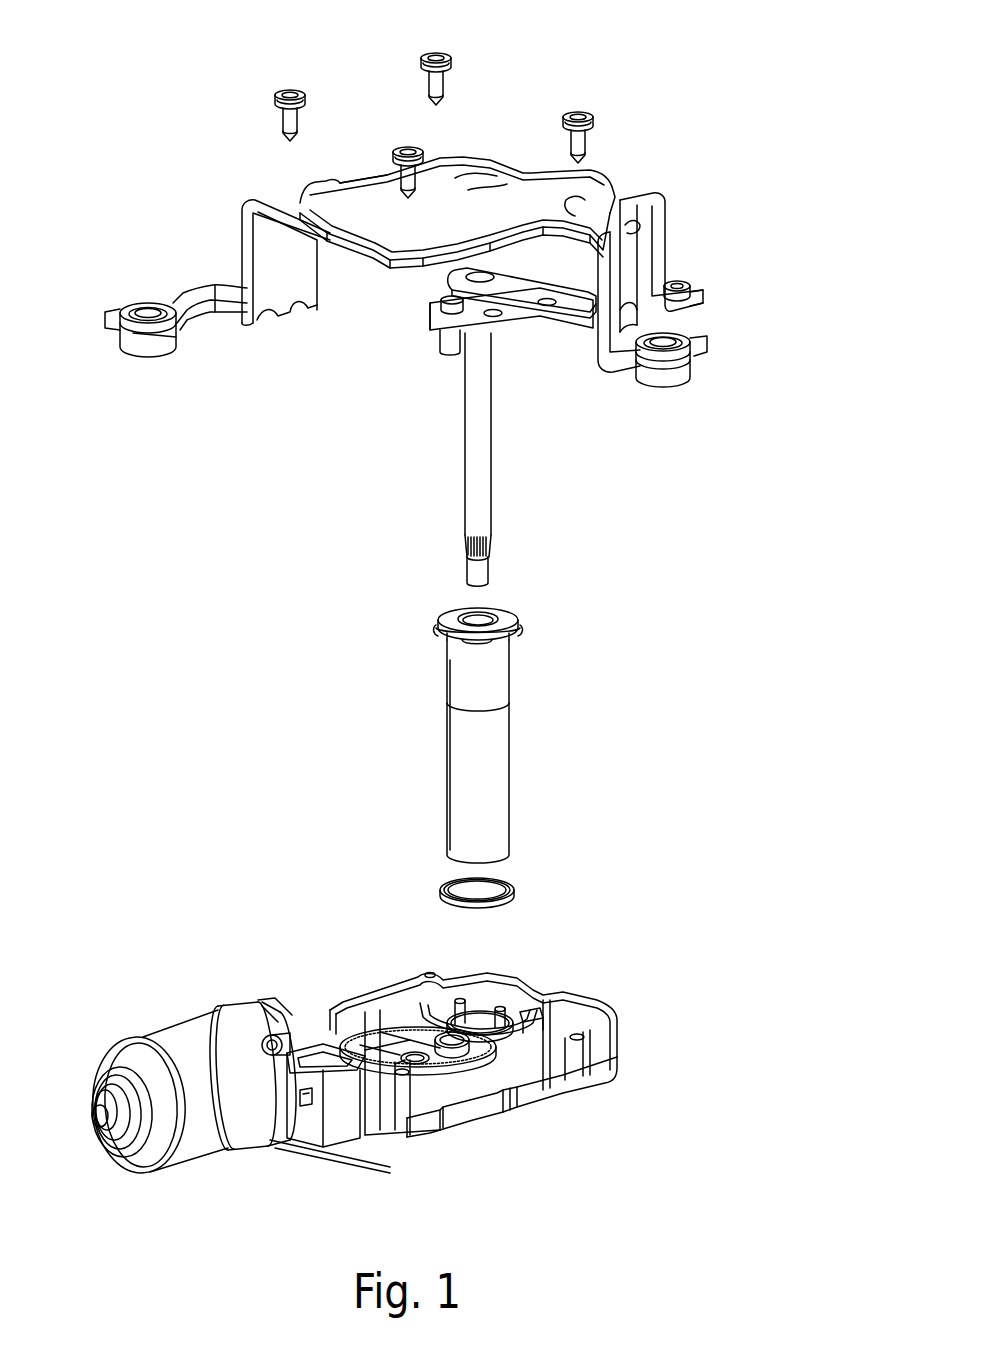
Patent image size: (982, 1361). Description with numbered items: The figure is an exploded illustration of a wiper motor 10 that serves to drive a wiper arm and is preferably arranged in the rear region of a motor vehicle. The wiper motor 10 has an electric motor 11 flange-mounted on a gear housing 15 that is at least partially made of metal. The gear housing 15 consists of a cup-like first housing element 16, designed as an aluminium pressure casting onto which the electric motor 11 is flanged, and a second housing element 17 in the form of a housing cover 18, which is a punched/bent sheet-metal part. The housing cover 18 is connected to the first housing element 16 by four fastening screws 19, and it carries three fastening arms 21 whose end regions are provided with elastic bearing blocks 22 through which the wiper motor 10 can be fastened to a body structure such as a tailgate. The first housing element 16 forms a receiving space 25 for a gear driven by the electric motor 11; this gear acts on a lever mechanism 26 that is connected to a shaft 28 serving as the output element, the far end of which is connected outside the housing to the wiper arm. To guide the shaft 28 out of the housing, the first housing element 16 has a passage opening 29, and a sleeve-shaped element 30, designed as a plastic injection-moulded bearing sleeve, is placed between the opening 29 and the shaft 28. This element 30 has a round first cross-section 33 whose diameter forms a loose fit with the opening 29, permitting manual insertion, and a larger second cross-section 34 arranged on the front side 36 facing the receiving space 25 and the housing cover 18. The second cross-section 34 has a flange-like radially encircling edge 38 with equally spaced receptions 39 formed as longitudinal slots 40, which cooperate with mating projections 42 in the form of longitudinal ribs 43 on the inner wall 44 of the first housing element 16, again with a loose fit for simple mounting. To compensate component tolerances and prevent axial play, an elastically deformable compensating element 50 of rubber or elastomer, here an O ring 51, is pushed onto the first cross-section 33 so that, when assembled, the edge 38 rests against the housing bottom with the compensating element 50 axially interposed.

The wiper motor 10 is at (288, 712).
The electric motor 11 is at (225, 1127).
The gear housing 15 is at (473, 1087).
The first housing element 16 is at (473, 1113).
The second housing element 17 is at (585, 200).
The housing cover 18 is at (363, 179).
The fastening screws 19 is at (307, 100).
The fastening arms 21 is at (209, 312).
The bearing blocks 22 is at (145, 345).
The receiving space 25 is at (418, 998).
The lever mechanism 26 is at (513, 318).
The shaft 28 is at (477, 452).
The opening 29 is at (482, 1018).
The sleeve-shaped element 30 is at (491, 751).
The first cross-section 33 is at (467, 785).
The second cross-section 34 is at (448, 620).
The front side 36 is at (505, 620).
The edge 38 is at (445, 632).
The receptions 39 is at (470, 605).
The longitudinal slots 40 is at (478, 630).
The mating projections 42 is at (534, 972).
The longitudinal ribs 43 is at (460, 1000).
The inner wall 44 is at (482, 992).
The compensating element 50 is at (523, 865).
The O ring 51 is at (498, 877).